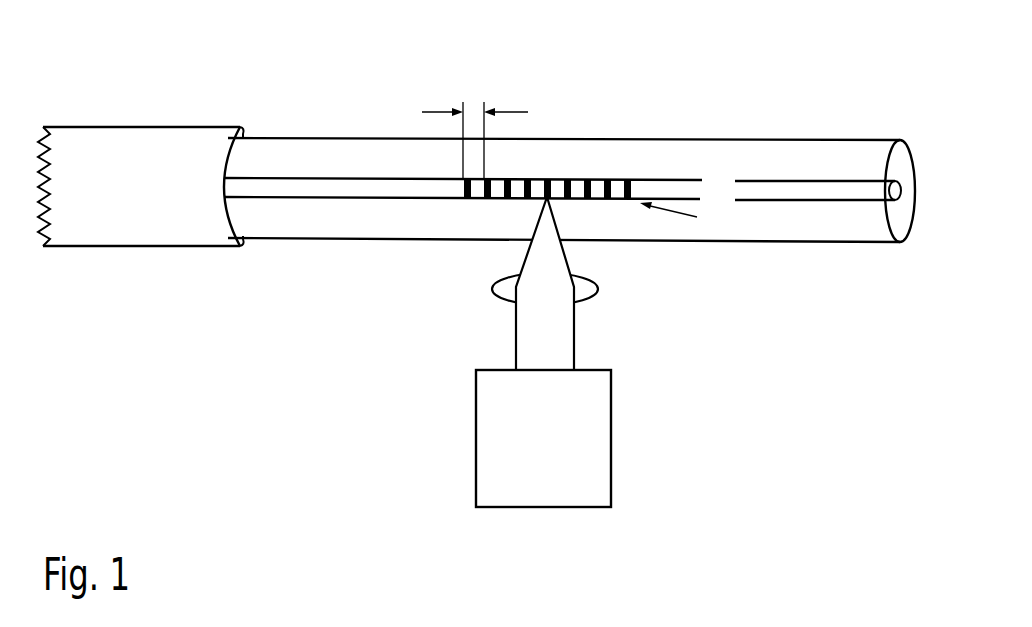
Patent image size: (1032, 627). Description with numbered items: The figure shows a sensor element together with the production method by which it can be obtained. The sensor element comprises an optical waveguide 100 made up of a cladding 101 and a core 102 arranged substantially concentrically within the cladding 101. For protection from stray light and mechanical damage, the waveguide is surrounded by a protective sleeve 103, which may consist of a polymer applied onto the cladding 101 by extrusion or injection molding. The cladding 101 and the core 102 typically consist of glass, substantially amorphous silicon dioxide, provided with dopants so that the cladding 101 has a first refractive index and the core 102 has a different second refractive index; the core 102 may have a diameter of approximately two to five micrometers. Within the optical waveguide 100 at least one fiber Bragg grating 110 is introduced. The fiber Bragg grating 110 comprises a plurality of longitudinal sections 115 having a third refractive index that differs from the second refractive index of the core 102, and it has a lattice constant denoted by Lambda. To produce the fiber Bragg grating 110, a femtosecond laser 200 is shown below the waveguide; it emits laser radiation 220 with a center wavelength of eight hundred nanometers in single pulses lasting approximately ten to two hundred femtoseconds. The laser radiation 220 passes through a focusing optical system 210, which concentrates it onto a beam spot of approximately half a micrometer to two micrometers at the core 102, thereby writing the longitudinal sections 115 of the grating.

The optical waveguide 100 is at (476, 152).
The cladding 101 is at (344, 225).
The core 102 is at (797, 190).
The protective sleeve 103 is at (137, 232).
The fiber Bragg grating 110 is at (577, 147).
The longitudinal sections 115 is at (607, 173).
The femtosecond laser 200 is at (521, 455).
The focusing optical system 210 is at (600, 288).
The laser radiation 220 is at (528, 332).